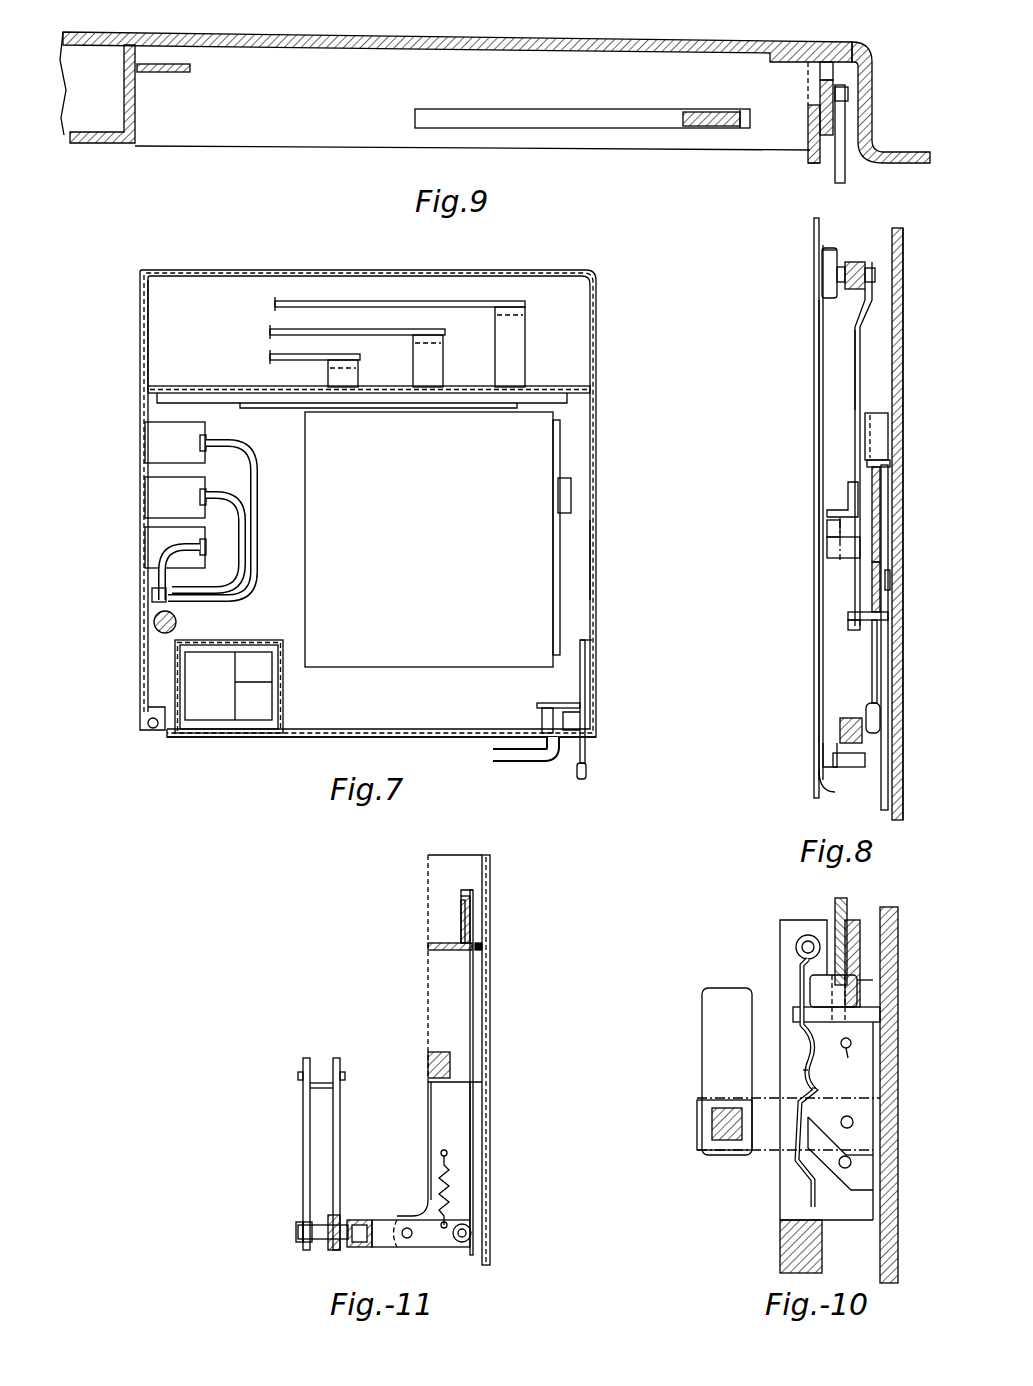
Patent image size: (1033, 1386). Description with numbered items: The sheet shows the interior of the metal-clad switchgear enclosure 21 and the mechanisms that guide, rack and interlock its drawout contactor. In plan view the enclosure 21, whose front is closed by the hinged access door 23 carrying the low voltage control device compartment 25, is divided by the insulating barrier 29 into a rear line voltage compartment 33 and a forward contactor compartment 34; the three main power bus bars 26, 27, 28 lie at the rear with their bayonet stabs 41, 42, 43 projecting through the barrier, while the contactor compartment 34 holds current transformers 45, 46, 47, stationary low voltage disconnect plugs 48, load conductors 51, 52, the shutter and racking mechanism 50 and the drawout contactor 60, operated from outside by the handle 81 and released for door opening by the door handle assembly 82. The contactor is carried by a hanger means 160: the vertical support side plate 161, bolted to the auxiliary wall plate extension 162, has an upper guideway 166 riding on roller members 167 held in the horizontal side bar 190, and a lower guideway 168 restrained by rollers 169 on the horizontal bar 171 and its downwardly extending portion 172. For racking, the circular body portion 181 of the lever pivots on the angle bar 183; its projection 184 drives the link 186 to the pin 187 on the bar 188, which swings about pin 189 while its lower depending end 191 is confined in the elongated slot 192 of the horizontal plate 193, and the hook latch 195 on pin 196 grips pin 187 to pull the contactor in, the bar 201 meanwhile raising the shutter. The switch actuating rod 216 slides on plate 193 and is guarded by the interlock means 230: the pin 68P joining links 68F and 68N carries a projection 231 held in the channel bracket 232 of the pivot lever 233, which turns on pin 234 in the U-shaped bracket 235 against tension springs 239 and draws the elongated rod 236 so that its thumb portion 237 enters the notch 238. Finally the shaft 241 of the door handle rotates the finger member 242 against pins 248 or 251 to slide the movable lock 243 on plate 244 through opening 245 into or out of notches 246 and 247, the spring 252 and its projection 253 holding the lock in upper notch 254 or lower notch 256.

In FIG. 9, the enclosure 21 is at (858, 43).
In FIG. 7, the enclosure 21 is at (596, 462).
In FIG. 8, the enclosure 21 is at (906, 310).
In FIG. 11, the enclosure 21 is at (492, 878).
In FIG. 7, the front opening access door 23 is at (418, 738).
In FIG. 7, the low voltage control device compartment 25 is at (284, 697).
In FIG. 7, the main power bus bar 26 is at (361, 358).
In FIG. 7, the main power bus bar 27 is at (446, 332).
In FIG. 7, the main power bus bar 28 is at (526, 304).
In FIG. 7, the insulating barrier 29 is at (540, 386).
In FIG. 7, the line voltage compartment 33 is at (166, 331).
In FIG. 7, the contactor compartment 34 is at (590, 520).
In FIG. 7, the bayonet stab 41 is at (334, 376).
In FIG. 7, the bayonet stab 42 is at (420, 376).
In FIG. 7, the bayonet stab 43 is at (500, 378).
In FIG. 7, the current transformer 45 is at (160, 445).
In FIG. 7, the current transformer 46 is at (160, 495).
In FIG. 7, the current transformer 47 is at (160, 547).
In FIG. 7, the stationary low voltage disconnect plug 48 is at (560, 493).
In FIG. 8, the shutter and racking mechanism 50 is at (832, 422).
In FIG. 7, the load conductor 51 is at (152, 593).
In FIG. 7, the load conductor 52 is at (154, 622).
In FIG. 7, the drawout contactor 60 is at (432, 539).
In FIG. 11, the link 68F is at (303, 1143).
In FIG. 11, the horizontal link 68N is at (305, 1245).
In FIG. 11, the pin 68P is at (310, 1225).
In FIG. 7, the handle 81 is at (587, 770).
In FIG. 8, the handle 81 is at (870, 665).
In FIG. 10, the handle 81 is at (838, 900).
In FIG. 7, the door handle assembly 82 is at (523, 763).
In FIG. 8, the hanger means 160 is at (816, 366).
In FIG. 8, the vertical support side plate 161 is at (822, 450).
In FIG. 8, the auxiliary wall plate extension 162 is at (818, 480).
In FIG. 8, the guideway 166 is at (830, 248).
In FIG. 8, the roller member 167 is at (822, 287).
In FIG. 8, the lower guideway 168 is at (818, 780).
In FIG. 8, the restraining roller 169 is at (848, 767).
In FIG. 8, the horizontal bar 171 is at (845, 718).
In FIG. 11, the horizontal bar 171 is at (430, 1058).
In FIG. 10, the horizontal bar 171 is at (782, 1245).
In FIG. 8, the downwardly extending portion 172 is at (823, 750).
In FIG. 8, the circular body portion 181 is at (884, 522).
In FIG. 9, the angle bar 183 is at (866, 72).
In FIG. 8, the angle bar 183 is at (897, 366).
In FIG. 10, the angle bar 183 is at (890, 955).
In FIG. 8, the projection 184 is at (878, 460).
In FIG. 8, the link 186 is at (881, 498).
In FIG. 8, the pin 187 is at (838, 517).
In FIG. 8, the bar 188 is at (860, 318).
In FIG. 8, the pin 189 is at (876, 274).
In FIG. 8, the horizontal side bar 190 is at (855, 262).
In FIG. 9, the lower depending end 191 is at (708, 114).
In FIG. 8, the lower depending end 191 is at (850, 628).
In FIG. 9, the elongated slot 192 is at (598, 104).
In FIG. 9, the horizontal plate 193 is at (295, 148).
In FIG. 8, the horizontal plate 193 is at (848, 616).
In FIG. 11, the horizontal plate 193 is at (428, 946).
In FIG. 10, the horizontal plate 193 is at (878, 1014).
In FIG. 8, the hook latch 195 is at (828, 525).
In FIG. 8, the pin 196 is at (828, 548).
In FIG. 8, the bar 201 is at (880, 413).
In FIG. 7, the rod 216 is at (585, 722).
In FIG. 8, the rod 216 is at (882, 595).
In FIG. 11, the rod 216 is at (462, 910).
In FIG. 10, the rod 216 is at (855, 920).
In FIG. 11, the interlock means 230 is at (403, 1104).
In FIG. 11, the projection 231 is at (334, 1250).
In FIG. 11, the channel bracket 232 is at (358, 1220).
In FIG. 11, the pivot lever 233 is at (435, 1248).
In FIG. 11, the pin 234 is at (405, 1240).
In FIG. 11, the U-shaped bracket 235 is at (430, 1138).
In FIG. 9, the elongated rod 236 is at (165, 72).
In FIG. 11, the elongated rod 236 is at (473, 1105).
In FIG. 11, the thumb portion 237 is at (465, 892).
In FIG. 11, the notch 238 is at (470, 916).
In FIG. 11, the tension spring 239 is at (435, 1165).
In FIG. 10, the shaft 241 is at (714, 1128).
In FIG. 9, the finger member 242 is at (845, 176).
In FIG. 10, the finger member 242 is at (702, 1043).
In FIG. 9, the movable lock 243 is at (822, 88).
In FIG. 10, the movable lock 243 is at (812, 985).
In FIG. 9, the plate 244 is at (812, 158).
In FIG. 10, the plate 244 is at (782, 920).
In FIG. 9, the opening 245 is at (810, 124).
In FIG. 10, the notch 246 is at (860, 972).
In FIG. 10, the notch 247 is at (862, 980).
In FIG. 10, the pin 248 is at (853, 1122).
In FIG. 9, the pin 251 is at (848, 94).
In FIG. 10, the pin 251 is at (844, 1055).
In FIG. 10, the spring 252 is at (806, 1150).
In FIG. 10, the projection 253 is at (815, 1092).
In FIG. 10, the upper notch 254 is at (805, 1040).
In FIG. 10, the lower notch 256 is at (806, 1078).